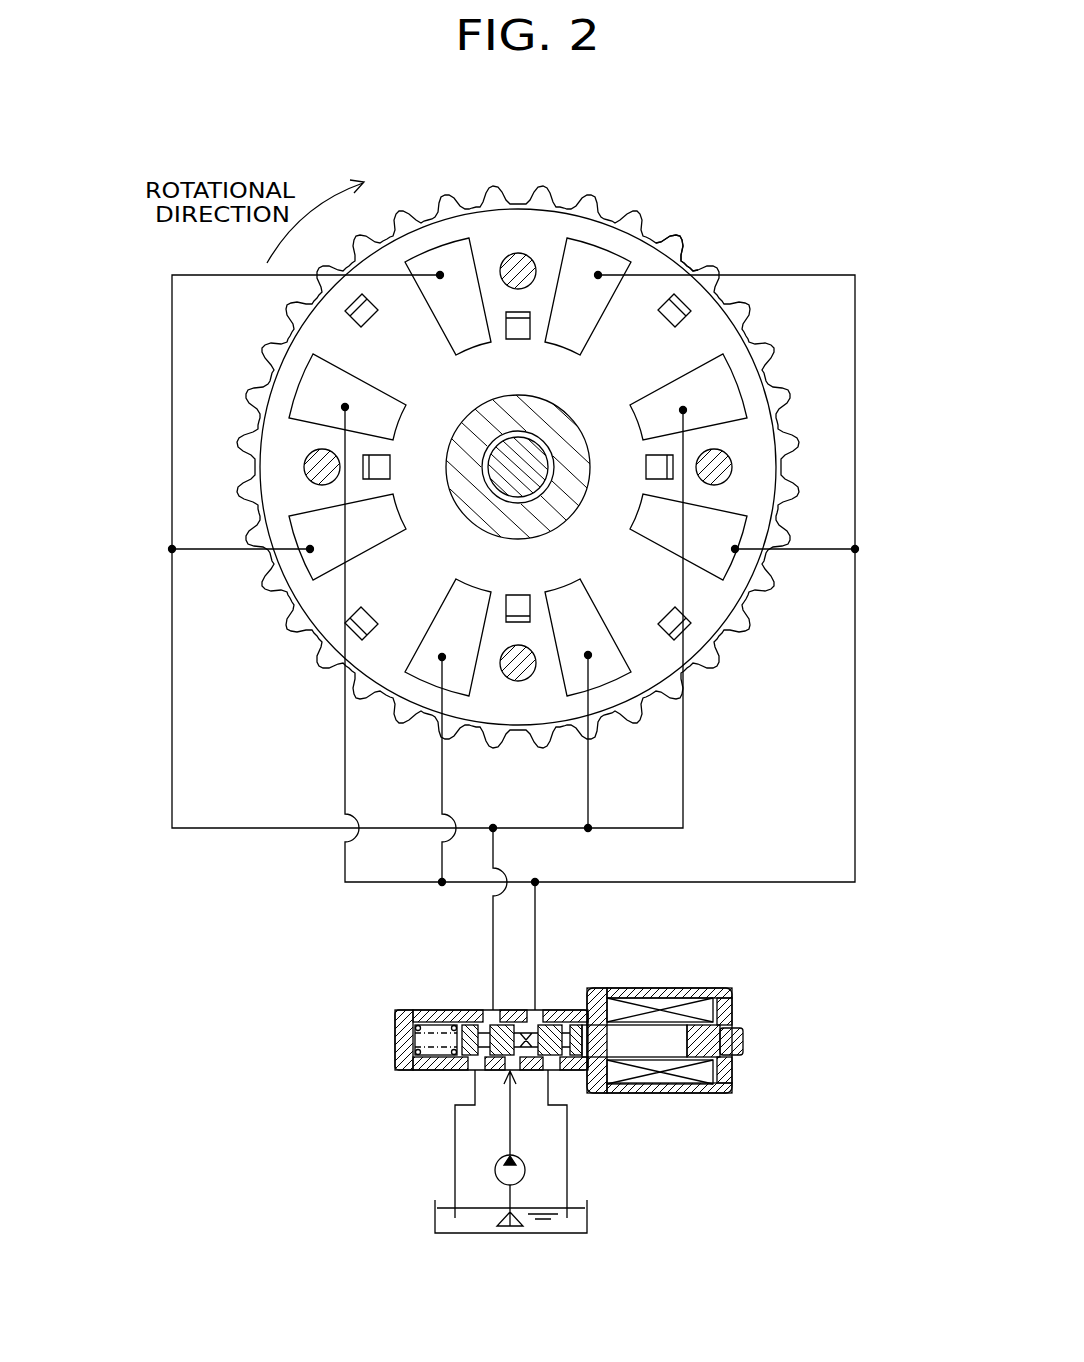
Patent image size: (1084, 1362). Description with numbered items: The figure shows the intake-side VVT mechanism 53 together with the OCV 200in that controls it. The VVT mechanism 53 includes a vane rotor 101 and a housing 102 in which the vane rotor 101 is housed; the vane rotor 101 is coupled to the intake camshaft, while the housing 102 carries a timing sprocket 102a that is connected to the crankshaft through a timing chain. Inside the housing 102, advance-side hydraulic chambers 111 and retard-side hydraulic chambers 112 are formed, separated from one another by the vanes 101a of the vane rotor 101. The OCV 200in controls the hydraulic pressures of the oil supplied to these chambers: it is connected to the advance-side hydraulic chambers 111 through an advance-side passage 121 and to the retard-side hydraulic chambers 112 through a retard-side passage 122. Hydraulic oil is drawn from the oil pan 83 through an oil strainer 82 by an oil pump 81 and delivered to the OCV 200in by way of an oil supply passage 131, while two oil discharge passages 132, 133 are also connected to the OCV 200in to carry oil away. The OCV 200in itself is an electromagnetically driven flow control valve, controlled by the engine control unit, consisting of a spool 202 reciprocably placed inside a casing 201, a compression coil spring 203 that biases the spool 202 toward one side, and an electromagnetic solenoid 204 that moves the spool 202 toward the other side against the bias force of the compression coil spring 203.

The housing 102 is at (538, 205).
The VVT mechanism 53 is at (665, 214).
The timing sprocket 102a is at (710, 268).
The vane rotor 101 is at (440, 400).
The vanes 101a is at (352, 343).
The advance-side hydraulic chambers 111 is at (600, 310).
The retard-side hydraulic chambers 112 is at (480, 310).
The advance-side passage 121 is at (535, 910).
The retard-side passage 122 is at (493, 908).
The OCV 200in is at (566, 999).
The casing 201 is at (435, 1012).
The spool 202 is at (548, 1025).
The compression coil spring 203 is at (418, 1040).
The electromagnetic solenoid 204 is at (660, 996).
The oil supply passage 131 is at (510, 1143).
The oil pump 81 is at (525, 1165).
The oil discharge passage 132 is at (567, 1163).
The oil discharge passage 133 is at (455, 1170).
The oil pan 83 is at (435, 1222).
The oil strainer 82 is at (510, 1235).